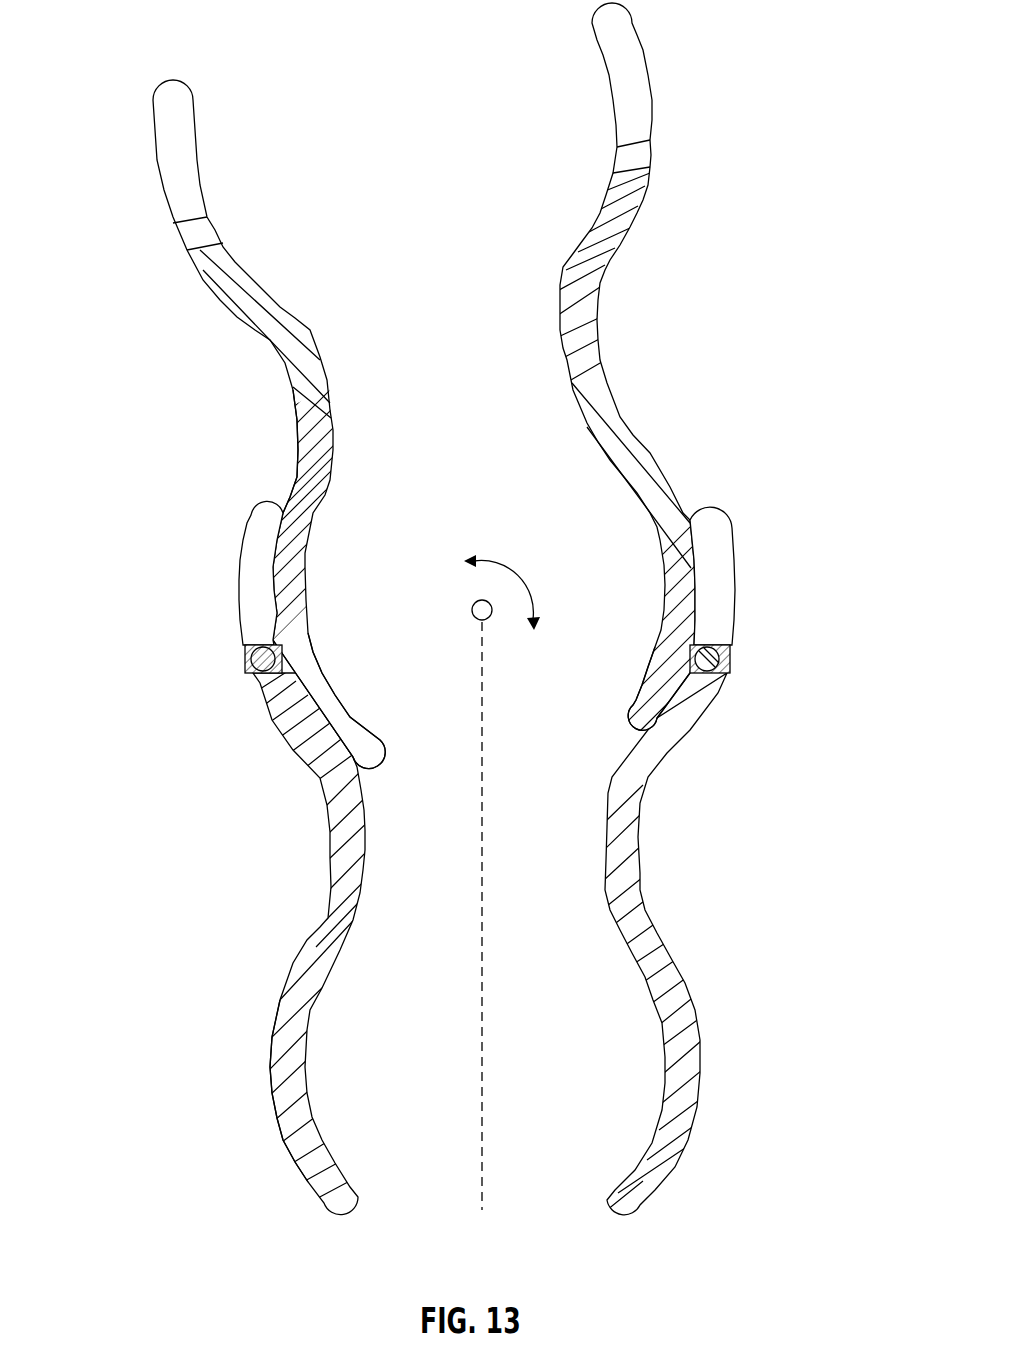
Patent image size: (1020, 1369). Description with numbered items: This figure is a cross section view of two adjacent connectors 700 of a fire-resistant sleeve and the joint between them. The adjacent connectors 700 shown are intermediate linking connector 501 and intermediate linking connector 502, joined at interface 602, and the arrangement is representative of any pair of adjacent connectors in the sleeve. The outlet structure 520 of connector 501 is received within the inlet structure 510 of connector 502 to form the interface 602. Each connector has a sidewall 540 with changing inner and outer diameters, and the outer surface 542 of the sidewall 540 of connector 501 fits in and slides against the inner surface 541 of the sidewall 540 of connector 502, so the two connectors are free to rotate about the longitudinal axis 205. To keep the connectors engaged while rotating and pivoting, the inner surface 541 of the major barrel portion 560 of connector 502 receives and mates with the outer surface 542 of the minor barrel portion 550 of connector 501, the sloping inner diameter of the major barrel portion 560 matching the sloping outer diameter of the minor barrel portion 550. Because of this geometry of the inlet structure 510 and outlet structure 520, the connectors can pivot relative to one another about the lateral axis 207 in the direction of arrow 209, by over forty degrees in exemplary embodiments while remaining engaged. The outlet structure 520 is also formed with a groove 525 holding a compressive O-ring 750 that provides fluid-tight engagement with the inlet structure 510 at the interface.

The adjacent connectors 700 is at (287, 639).
The intermediate linking connector 501 is at (153, 153).
The intermediate linking connector 502 is at (328, 870).
The sidewall 540 is at (212, 268).
The outer surface 542 is at (297, 410).
The inner surface 541 is at (370, 815).
The outlet structure 520 is at (297, 578).
The inlet structure 510 is at (243, 543).
The groove 525 is at (247, 652).
The O-ring 750 is at (262, 660).
The interface 602 is at (697, 540).
The minor barrel portion 550 is at (645, 692).
The major barrel portion 560 is at (705, 683).
The longitudinal axis 205 is at (486, 982).
The lateral axis 207 is at (492, 615).
The arrow 209 is at (524, 571).